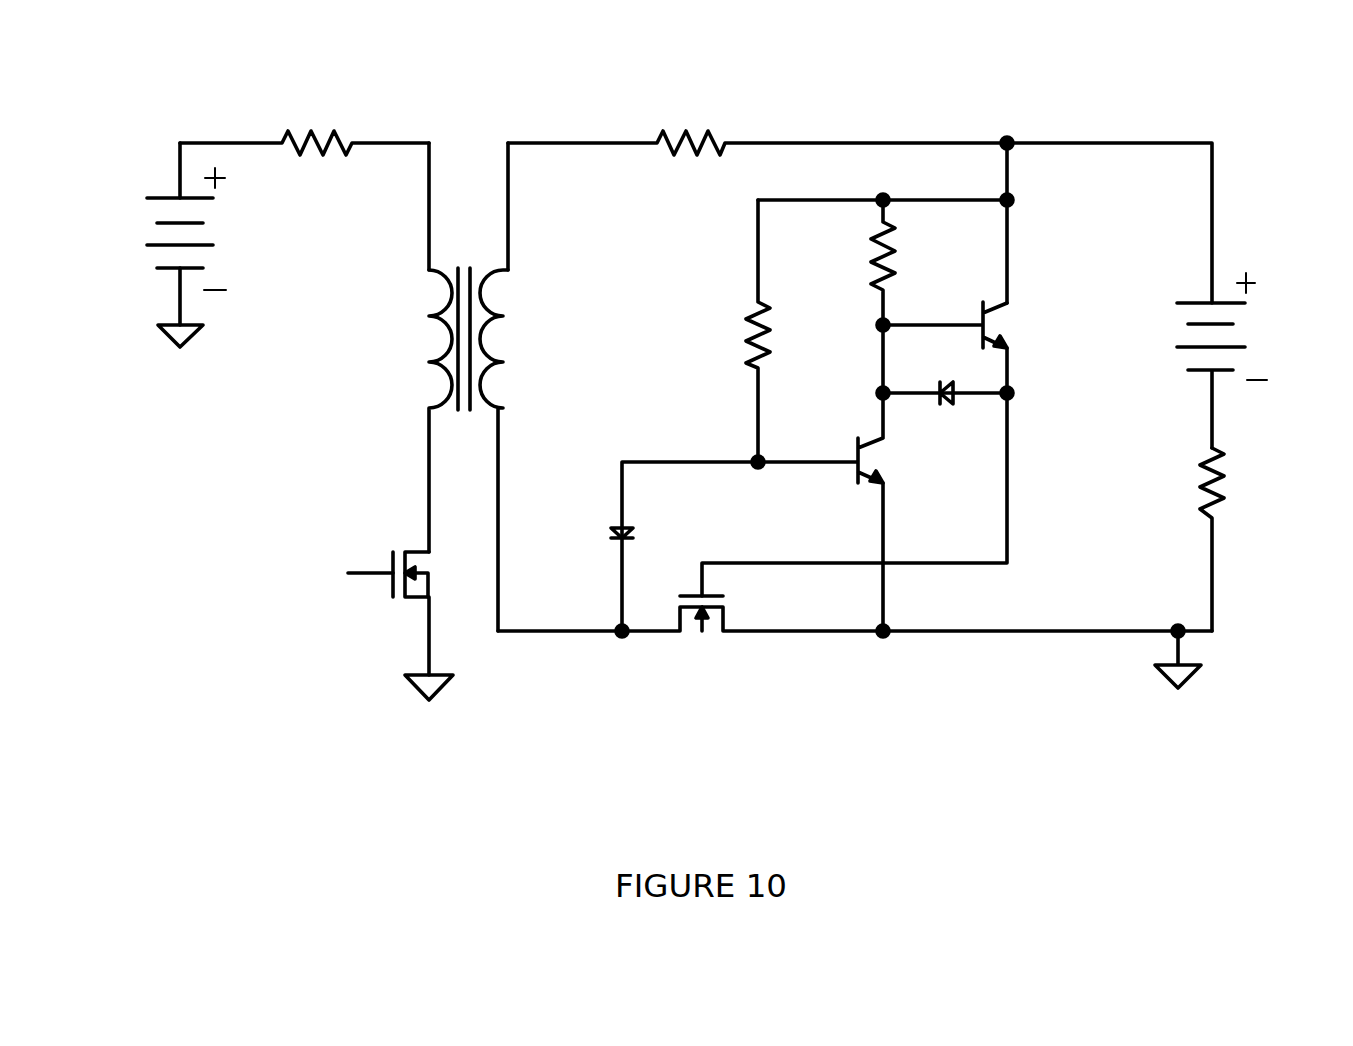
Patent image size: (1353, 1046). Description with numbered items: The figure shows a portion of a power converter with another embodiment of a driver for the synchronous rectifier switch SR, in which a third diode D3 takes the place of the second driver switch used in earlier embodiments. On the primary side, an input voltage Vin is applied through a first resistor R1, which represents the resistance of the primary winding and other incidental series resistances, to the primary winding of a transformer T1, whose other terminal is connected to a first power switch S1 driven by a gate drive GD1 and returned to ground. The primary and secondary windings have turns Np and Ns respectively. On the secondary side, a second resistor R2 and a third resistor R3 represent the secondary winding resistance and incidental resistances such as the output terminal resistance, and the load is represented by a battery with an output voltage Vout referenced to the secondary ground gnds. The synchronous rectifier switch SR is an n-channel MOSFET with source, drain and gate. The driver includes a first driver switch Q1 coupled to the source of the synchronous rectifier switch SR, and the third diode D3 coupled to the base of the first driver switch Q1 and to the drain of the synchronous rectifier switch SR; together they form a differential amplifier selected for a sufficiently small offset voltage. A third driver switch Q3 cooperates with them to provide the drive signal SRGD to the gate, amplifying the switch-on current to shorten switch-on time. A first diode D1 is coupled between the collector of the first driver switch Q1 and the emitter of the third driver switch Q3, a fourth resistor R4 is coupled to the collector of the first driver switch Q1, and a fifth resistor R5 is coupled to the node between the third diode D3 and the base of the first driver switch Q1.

The input voltage Vin is at (209, 245).
The first resistor R1 is at (304, 126).
The second resistor R2 is at (860, 199).
The third resistor R3 is at (1190, 539).
The fourth resistor R4 is at (856, 262).
The fifth resistor R5 is at (731, 331).
The transformer T1 is at (468, 276).
The turns of the primary winding Np is at (418, 411).
The turns of the secondary winding Ns is at (511, 450).
The first power switch S1 is at (432, 623).
The gate drive of primary switch GD1 is at (359, 597).
The first driver switch Q1 is at (845, 478).
The third driver switch Q3 is at (886, 437).
The first diode D1 is at (945, 374).
The third diode D3 is at (664, 546).
The synchronous rectifier switch SR is at (855, 635).
The drive signal SRGD is at (746, 532).
The output voltage Vout is at (1249, 360).
The secondary ground gnds is at (1214, 664).